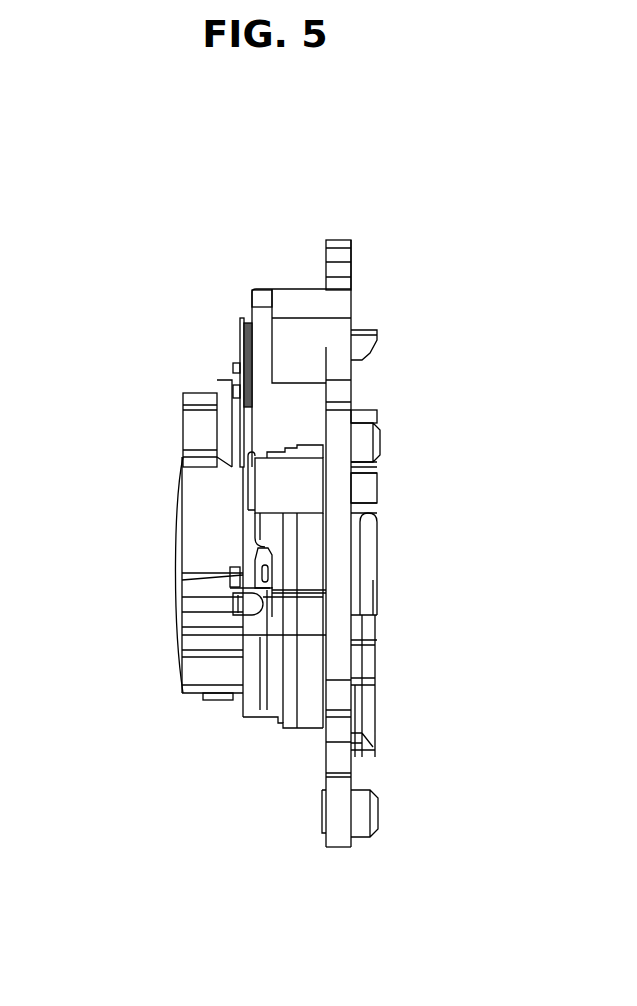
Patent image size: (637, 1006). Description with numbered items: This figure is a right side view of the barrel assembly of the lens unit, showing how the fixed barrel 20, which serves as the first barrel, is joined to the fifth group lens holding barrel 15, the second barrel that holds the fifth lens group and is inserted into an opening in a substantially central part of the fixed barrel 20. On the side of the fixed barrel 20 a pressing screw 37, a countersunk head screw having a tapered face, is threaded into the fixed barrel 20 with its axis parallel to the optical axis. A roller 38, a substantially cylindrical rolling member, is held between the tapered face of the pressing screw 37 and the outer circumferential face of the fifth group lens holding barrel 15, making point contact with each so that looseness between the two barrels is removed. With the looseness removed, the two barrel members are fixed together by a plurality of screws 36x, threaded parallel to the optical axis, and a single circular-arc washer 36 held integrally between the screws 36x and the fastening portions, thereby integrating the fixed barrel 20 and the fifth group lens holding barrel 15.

The fixed barrel 20 is at (307, 290).
The washer 36 is at (242, 318).
The screws 36x is at (233, 372).
The fifth group lens holding barrel 15 is at (197, 427).
The pressing screw 37 is at (250, 492).
The roller 38 is at (258, 527).